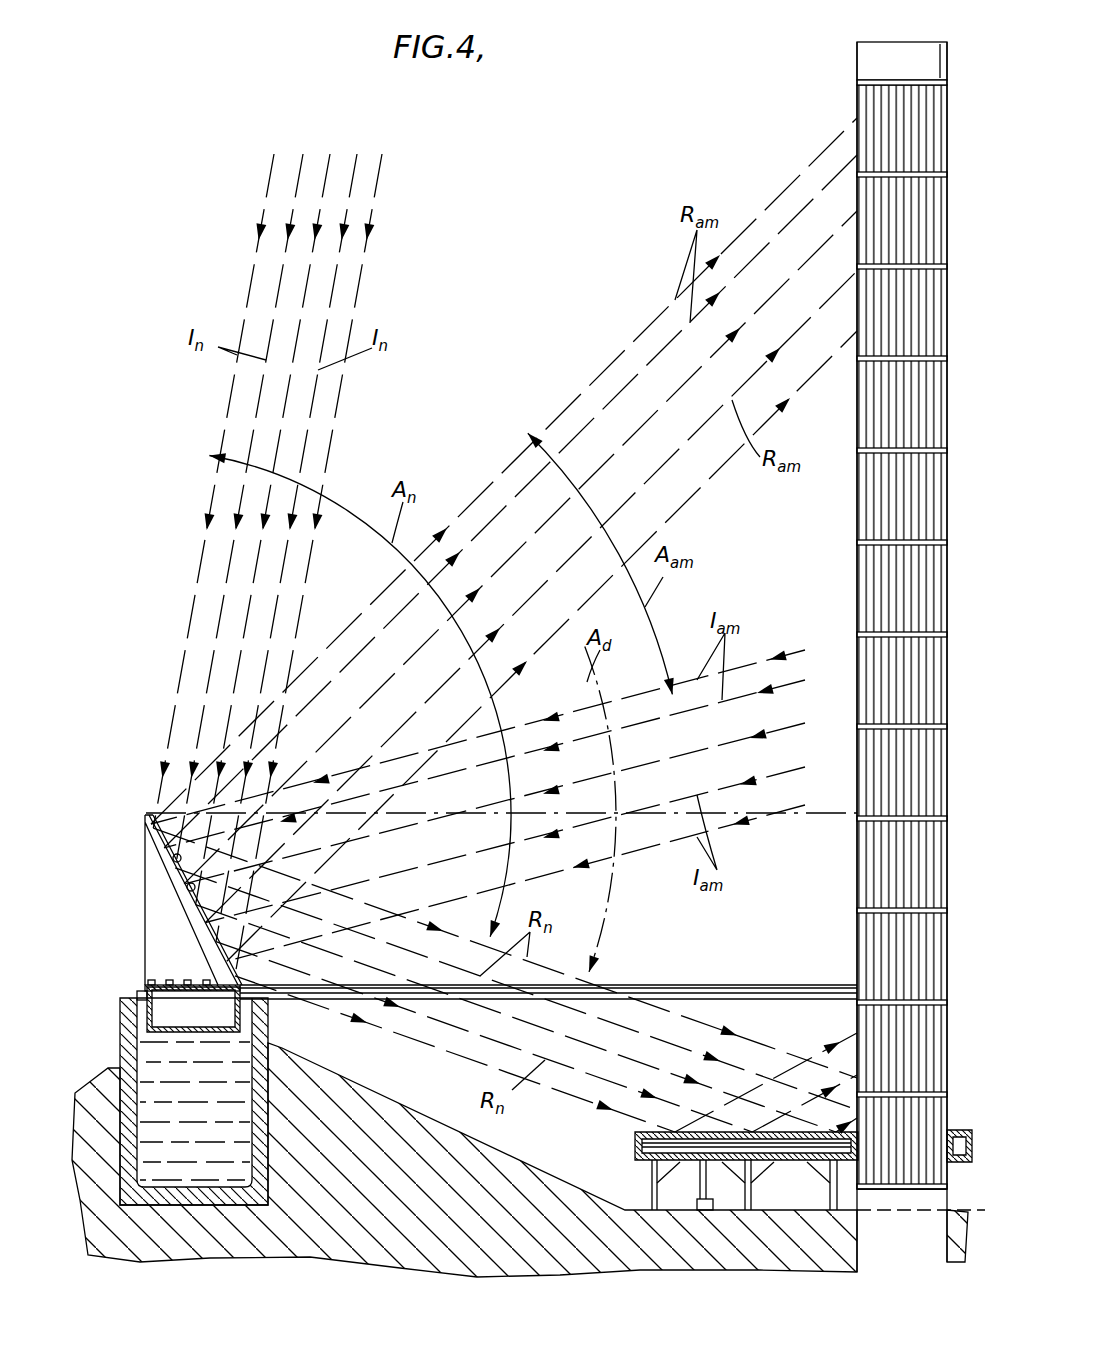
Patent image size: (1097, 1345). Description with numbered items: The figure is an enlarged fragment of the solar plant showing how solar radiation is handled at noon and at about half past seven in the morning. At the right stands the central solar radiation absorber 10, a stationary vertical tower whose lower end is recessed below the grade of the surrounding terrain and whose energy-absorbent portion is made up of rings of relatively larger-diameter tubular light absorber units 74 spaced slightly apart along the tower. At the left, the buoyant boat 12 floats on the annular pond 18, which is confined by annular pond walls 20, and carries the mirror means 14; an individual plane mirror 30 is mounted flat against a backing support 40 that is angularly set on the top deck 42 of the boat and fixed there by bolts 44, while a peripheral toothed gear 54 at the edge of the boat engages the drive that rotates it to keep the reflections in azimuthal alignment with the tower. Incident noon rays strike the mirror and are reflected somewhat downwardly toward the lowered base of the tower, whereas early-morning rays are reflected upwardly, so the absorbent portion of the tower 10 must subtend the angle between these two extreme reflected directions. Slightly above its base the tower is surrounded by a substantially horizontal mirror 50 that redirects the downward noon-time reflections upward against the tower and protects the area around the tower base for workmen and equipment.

The central solar radiation absorber 10 is at (853, 528).
The boat 12 is at (258, 1008).
The mirror means 14 is at (172, 858).
The annular pond 18 is at (150, 1066).
The annular pond walls 20 is at (130, 1038).
The mirror 30 is at (186, 889).
The backing support 40 is at (160, 907).
The top deck 42 is at (228, 990).
The bolts 44 is at (168, 978).
The substantially horizontal mirror 50 is at (655, 1134).
The peripheral toothed gear 54 is at (137, 1002).
The light absorber units 74 is at (898, 135).